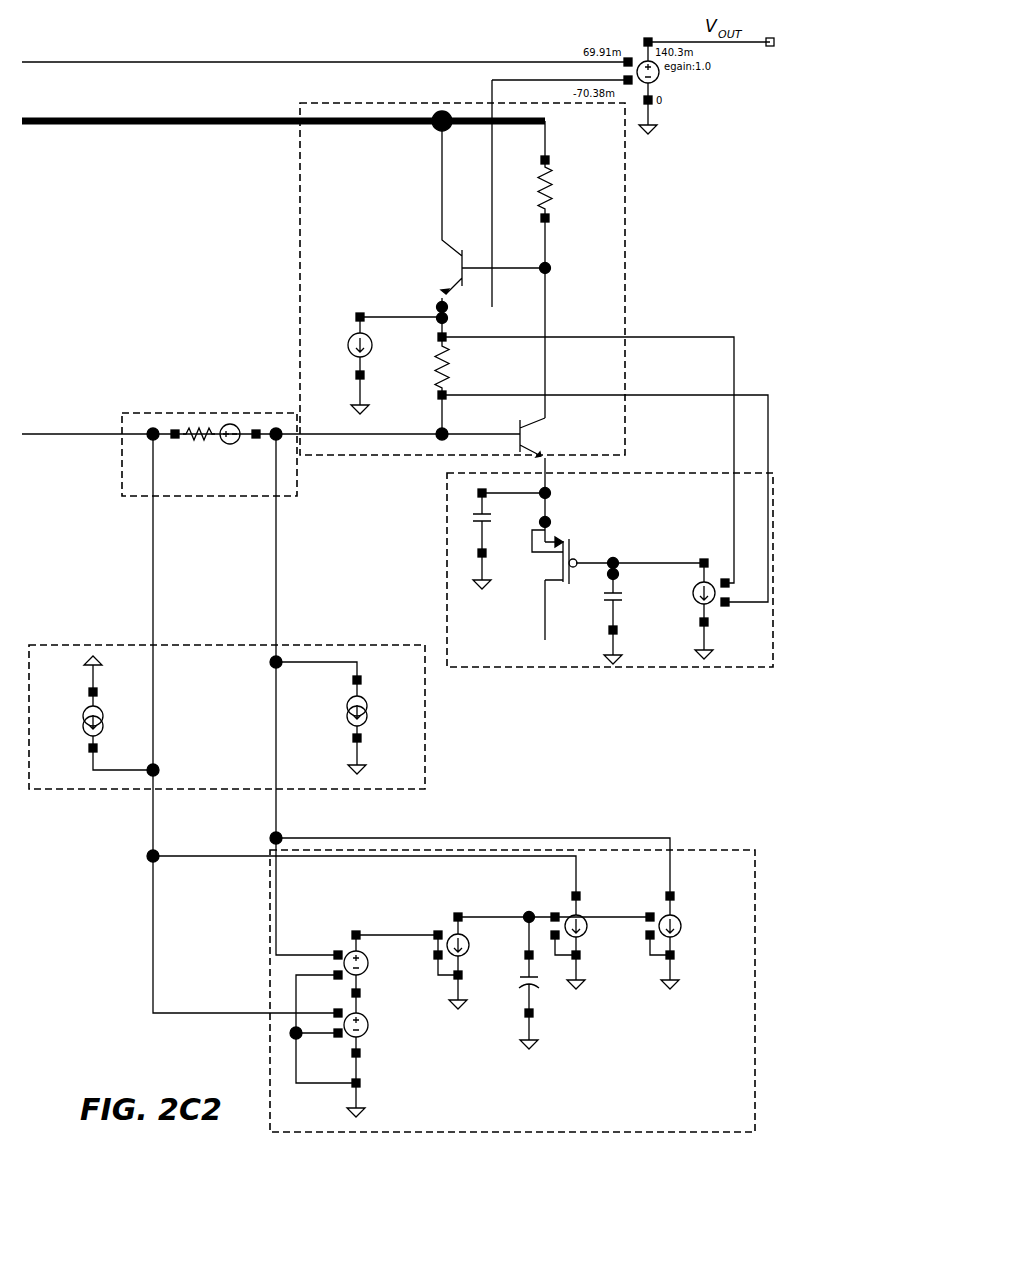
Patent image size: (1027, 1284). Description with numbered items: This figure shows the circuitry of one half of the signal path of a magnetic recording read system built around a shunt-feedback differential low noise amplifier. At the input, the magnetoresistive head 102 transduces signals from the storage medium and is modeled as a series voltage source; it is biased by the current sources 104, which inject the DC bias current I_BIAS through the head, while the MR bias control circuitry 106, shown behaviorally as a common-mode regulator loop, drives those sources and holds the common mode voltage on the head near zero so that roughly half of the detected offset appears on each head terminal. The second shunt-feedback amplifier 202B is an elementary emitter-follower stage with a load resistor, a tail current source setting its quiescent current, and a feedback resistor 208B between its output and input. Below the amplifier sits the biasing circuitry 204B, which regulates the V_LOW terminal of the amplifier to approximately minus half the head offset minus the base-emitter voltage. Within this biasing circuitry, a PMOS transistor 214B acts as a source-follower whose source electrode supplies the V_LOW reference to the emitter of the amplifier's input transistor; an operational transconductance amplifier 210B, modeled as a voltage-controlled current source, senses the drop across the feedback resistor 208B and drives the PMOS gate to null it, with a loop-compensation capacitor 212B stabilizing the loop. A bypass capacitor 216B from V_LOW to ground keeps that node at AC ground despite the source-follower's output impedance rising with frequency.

The magnetoresistive (MR) head 102 is at (140, 497).
The current sources 104 is at (360, 645).
The MR bias control circuitry 106 is at (688, 850).
The second amplifier 202B is at (383, 102).
The biasing circuitry 204B is at (752, 667).
The feedback resistor 208B is at (450, 345).
The operational transconductance amplifier 210B is at (697, 605).
The loop-compensation capacitor 212B is at (606, 605).
The PMOS transistor 214B is at (575, 548).
The bypass capacitor 216B is at (492, 521).